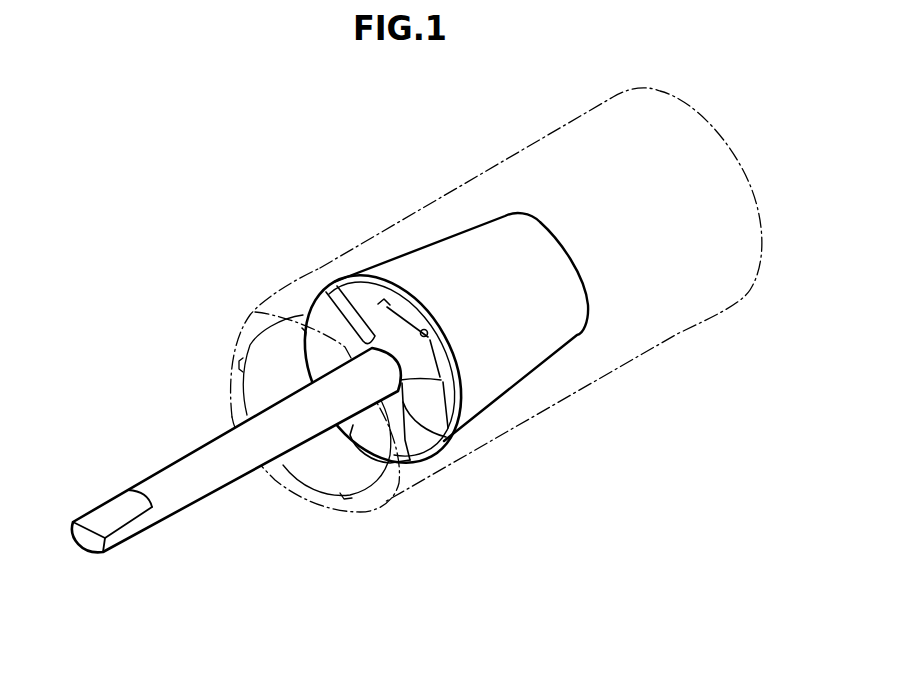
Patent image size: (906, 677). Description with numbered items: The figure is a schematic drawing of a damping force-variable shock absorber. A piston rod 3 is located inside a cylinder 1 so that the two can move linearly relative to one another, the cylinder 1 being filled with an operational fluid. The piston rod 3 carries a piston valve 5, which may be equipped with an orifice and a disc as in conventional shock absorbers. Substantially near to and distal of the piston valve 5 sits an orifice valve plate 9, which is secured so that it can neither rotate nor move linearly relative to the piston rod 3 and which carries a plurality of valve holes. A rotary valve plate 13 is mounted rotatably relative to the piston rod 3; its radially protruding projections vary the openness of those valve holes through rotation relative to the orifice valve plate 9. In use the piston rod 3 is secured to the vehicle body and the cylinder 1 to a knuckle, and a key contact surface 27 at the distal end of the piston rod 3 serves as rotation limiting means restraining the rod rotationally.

The cylinder 1 is at (675, 335).
The piston rod 3 is at (212, 476).
The piston valve 5 is at (430, 329).
The orifice valve plate 9 is at (370, 273).
The rotary valve plate 13 is at (311, 303).
The key contact surface 27 is at (103, 513).